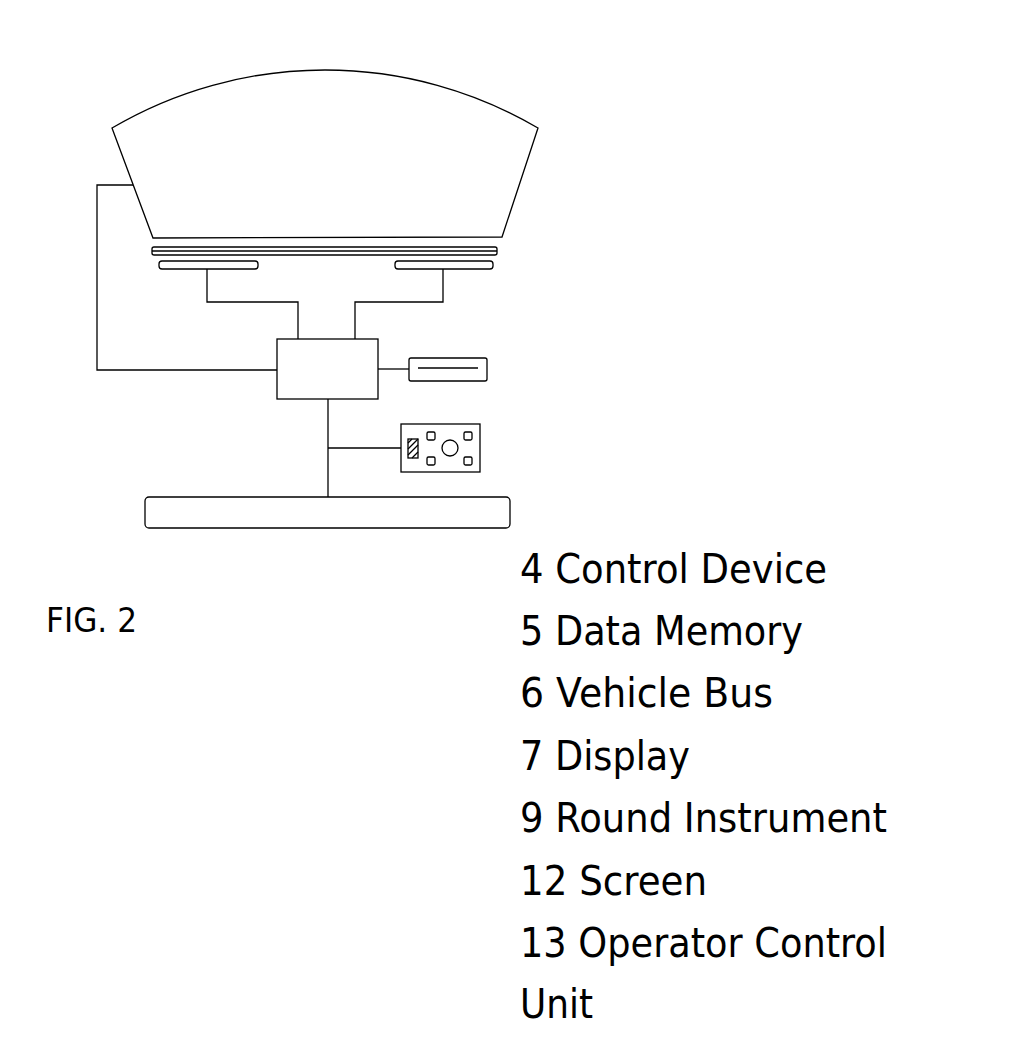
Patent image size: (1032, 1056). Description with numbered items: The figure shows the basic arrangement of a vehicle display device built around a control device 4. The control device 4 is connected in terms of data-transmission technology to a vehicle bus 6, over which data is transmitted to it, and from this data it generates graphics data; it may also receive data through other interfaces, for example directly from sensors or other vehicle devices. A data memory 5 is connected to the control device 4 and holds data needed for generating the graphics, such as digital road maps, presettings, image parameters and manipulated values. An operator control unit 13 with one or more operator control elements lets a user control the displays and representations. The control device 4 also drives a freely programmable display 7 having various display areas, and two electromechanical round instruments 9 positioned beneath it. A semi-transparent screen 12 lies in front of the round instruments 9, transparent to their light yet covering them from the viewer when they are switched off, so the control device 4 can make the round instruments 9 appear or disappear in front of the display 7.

The control device 4 is at (343, 379).
The data memory 5 is at (474, 373).
The vehicle bus 6 is at (462, 517).
The display 7 is at (445, 106).
The round instruments 9 is at (183, 266).
The screen 12 is at (493, 250).
The operator control unit 13 is at (473, 447).